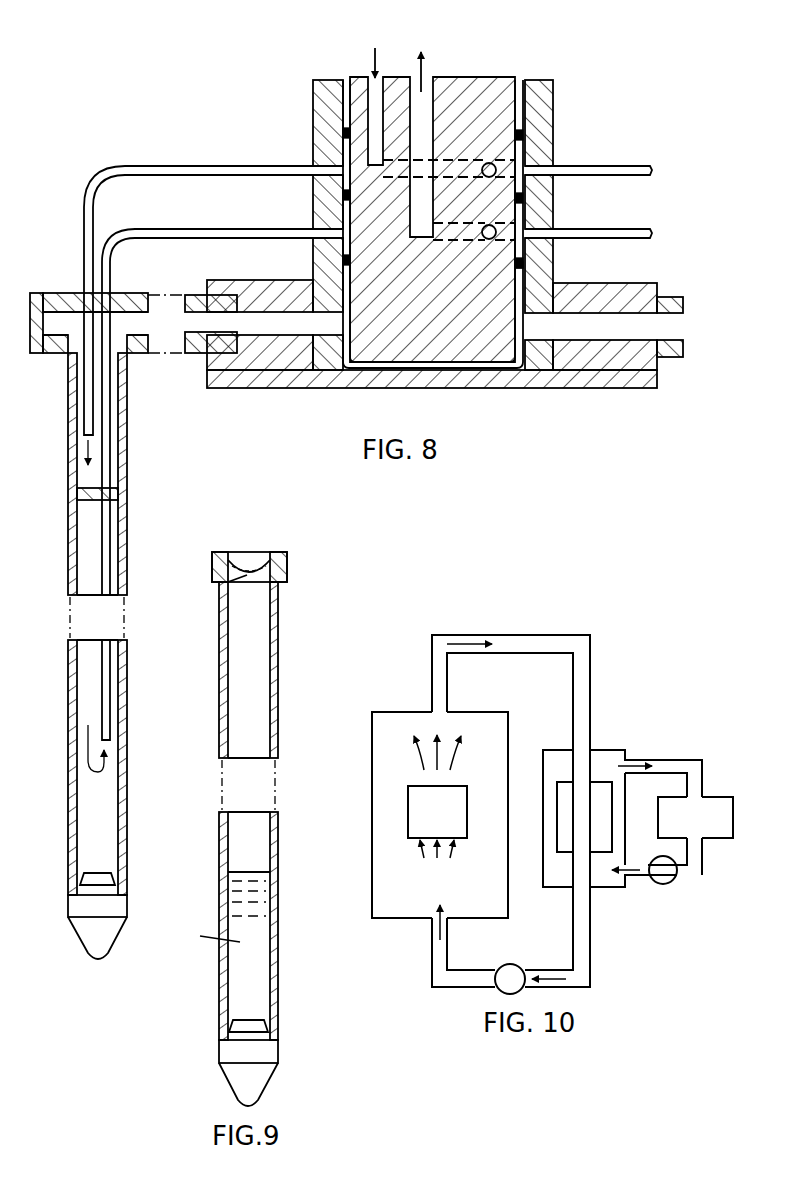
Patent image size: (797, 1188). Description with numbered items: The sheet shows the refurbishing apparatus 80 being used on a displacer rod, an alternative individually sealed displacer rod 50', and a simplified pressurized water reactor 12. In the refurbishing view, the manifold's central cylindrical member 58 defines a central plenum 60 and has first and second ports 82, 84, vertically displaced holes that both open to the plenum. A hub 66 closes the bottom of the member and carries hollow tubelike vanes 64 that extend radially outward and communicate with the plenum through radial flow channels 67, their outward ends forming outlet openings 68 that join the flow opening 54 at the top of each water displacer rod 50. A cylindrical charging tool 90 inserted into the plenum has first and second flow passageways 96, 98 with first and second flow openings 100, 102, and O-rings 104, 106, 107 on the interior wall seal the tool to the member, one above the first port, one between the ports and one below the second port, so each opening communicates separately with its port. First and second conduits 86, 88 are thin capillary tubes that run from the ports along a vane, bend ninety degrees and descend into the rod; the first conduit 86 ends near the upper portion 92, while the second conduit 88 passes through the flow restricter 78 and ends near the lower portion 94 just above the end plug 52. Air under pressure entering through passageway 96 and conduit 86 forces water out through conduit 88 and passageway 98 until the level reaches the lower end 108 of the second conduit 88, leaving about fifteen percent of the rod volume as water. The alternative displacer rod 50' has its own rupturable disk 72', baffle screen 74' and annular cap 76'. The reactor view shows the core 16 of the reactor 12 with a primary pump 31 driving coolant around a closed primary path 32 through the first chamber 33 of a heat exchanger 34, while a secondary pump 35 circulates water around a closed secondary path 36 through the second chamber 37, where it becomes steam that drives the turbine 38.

In FIG. 8, the central cylindrical member 58 is at (553, 95).
In FIG. 8, the central plenum 60 is at (512, 370).
In FIG. 8, the charging tool 90 is at (498, 72).
In FIG. 8, the first flow passageway 96 is at (372, 105).
In FIG. 8, the second flow passageway 98 is at (422, 100).
In FIG. 8, the O-ring 104 is at (343, 133).
In FIG. 8, the first flow opening 100 is at (343, 195).
In FIG. 8, the second flow opening 102 is at (343, 260).
In FIG. 8, the O-ring 106 is at (523, 198).
In FIG. 8, the O-ring 107 is at (523, 267).
In FIG. 8, the first port 82 is at (313, 160).
In FIG. 8, the second port 84 is at (313, 226).
In FIG. 8, the first conduit 86 is at (125, 166).
In FIG. 8, the second conduit 88 is at (160, 229).
In FIG. 8, the hub 66 is at (415, 388).
In FIG. 8, the radial flow channels 67 is at (272, 370).
In FIG. 8, the hollow tubelike vanes 64 is at (70, 293).
In FIG. 8, the outlet openings 68 is at (62, 300).
In FIG. 8, the water displacer rod 50 is at (102, 656).
In FIG. 8, the flow opening 54 is at (70, 380).
In FIG. 8, the upper portion 92 is at (72, 405).
In FIG. 8, the flow restricter 78 is at (80, 500).
In FIG. 8, the lower end of second conduit 108 is at (112, 740).
In FIG. 8, the lower portion 94 is at (128, 835).
In FIG. 8, the end plug 52 is at (80, 935).
In FIG. 8, the refurbishing apparatus 80 is at (630, 128).
In FIG. 9, the displacer rod 50' is at (253, 844).
In FIG. 9, the baffle screen 74' is at (249, 545).
In FIG. 9, the annular cap 76' is at (263, 556).
In FIG. 9, the rupturable disk 72' is at (217, 592).
In FIG. 10, the pressurized water reactor 12 is at (598, 645).
In FIG. 10, the reactor core 16 is at (408, 800).
In FIG. 10, the closed primary path 32 is at (506, 653).
In FIG. 10, the primary pump 31 is at (520, 966).
In FIG. 10, the heat exchanger 34 is at (612, 748).
In FIG. 10, the second chamber 37 is at (560, 750).
In FIG. 10, the first chamber 33 is at (557, 798).
In FIG. 10, the closed secondary path 36 is at (660, 774).
In FIG. 10, the turbine 38 is at (712, 797).
In FIG. 10, the secondary pump 35 is at (665, 884).